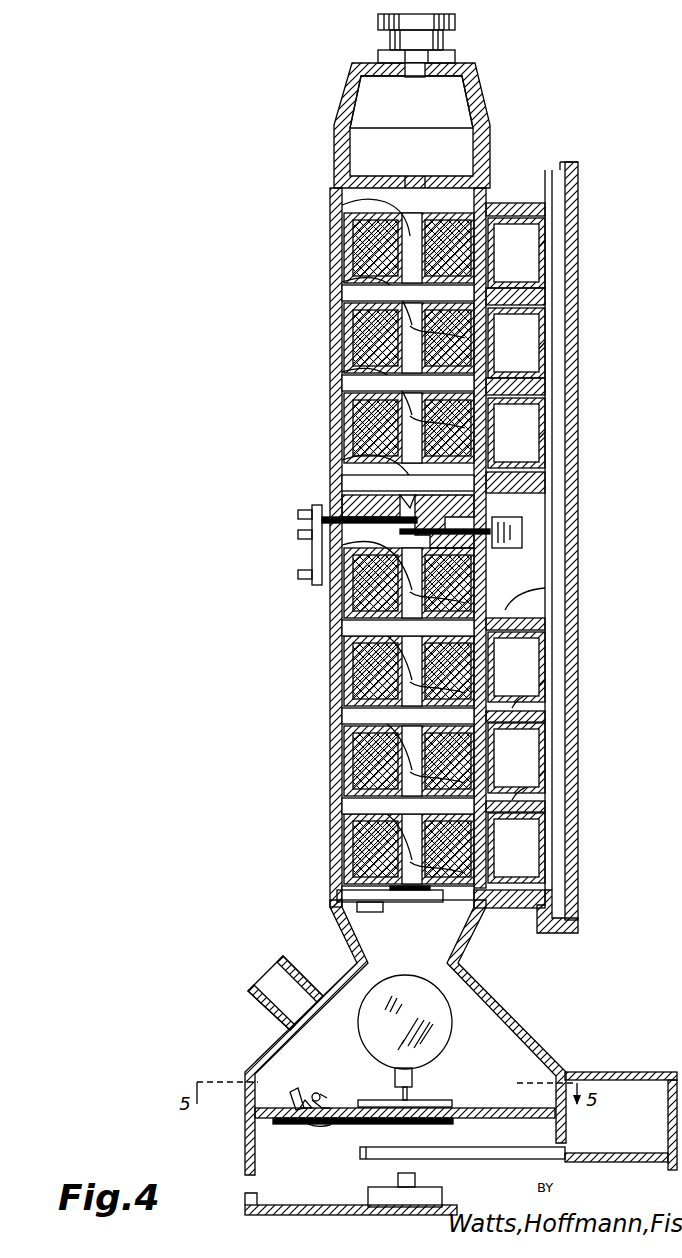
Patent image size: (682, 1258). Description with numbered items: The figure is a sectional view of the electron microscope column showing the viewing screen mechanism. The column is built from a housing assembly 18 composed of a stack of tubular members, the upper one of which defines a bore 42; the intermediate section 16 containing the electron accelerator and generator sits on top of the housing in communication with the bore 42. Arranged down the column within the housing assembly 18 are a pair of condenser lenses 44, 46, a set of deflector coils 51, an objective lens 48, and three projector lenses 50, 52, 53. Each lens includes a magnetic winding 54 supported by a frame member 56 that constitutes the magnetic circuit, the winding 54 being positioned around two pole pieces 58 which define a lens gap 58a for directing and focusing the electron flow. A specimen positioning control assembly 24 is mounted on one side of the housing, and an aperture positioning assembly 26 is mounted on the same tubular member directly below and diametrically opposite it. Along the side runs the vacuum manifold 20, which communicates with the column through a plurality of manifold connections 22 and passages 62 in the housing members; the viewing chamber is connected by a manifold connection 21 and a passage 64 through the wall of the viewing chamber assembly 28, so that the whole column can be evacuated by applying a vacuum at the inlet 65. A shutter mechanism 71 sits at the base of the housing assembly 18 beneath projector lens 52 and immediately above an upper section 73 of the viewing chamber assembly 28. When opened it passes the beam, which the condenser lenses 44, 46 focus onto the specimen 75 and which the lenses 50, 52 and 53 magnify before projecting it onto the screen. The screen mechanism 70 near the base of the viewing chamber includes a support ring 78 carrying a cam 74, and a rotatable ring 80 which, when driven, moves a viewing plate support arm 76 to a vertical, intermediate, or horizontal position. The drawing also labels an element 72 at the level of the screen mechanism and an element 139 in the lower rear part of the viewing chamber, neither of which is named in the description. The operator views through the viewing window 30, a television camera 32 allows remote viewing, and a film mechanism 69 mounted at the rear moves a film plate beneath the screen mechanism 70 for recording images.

The intermediate section 16 is at (455, 48).
The housing assembly 18 is at (336, 195).
The vacuum manifold 20 is at (580, 262).
The manifold connection 21 is at (548, 932).
The manifold connections 22 is at (560, 230).
The specimen positioning control assembly 24 is at (298, 528).
The aperture positioning assembly 26 is at (525, 530).
The viewing chamber assembly 28 is at (245, 1130).
The viewing window 30 is at (263, 1015).
The television camera 32 is at (370, 1203).
The bore 42 is at (490, 132).
The condenser lens 44 is at (331, 265).
The condenser lens 46 is at (331, 353).
The objective lens 48 is at (331, 603).
The projector lens 50 is at (330, 661).
The deflector coils 51 is at (331, 432).
The projector lens 52 is at (320, 828).
The projector lens 53 is at (320, 743).
The magnetic winding 54 is at (330, 313).
The frame member 56 is at (330, 246).
The pole pieces 58 is at (330, 212).
The lens gap 58a is at (516, 550).
The passages 62 is at (497, 200).
The passage 64 is at (336, 160).
The inlet 65 is at (575, 162).
The film mechanism 69 is at (616, 1070).
The screen mechanism 70 is at (410, 1093).
The shutter mechanism 71 is at (330, 898).
The shelf 72 is at (455, 1112).
The upper section 73 is at (462, 955).
The cam 74 is at (297, 1090).
The specimen 75 is at (335, 474).
The viewing plate support arm 76 is at (325, 1097).
The support ring 78 is at (292, 1092).
The rotatable ring 80 is at (318, 1118).
The bottom plate 139 is at (583, 1150).